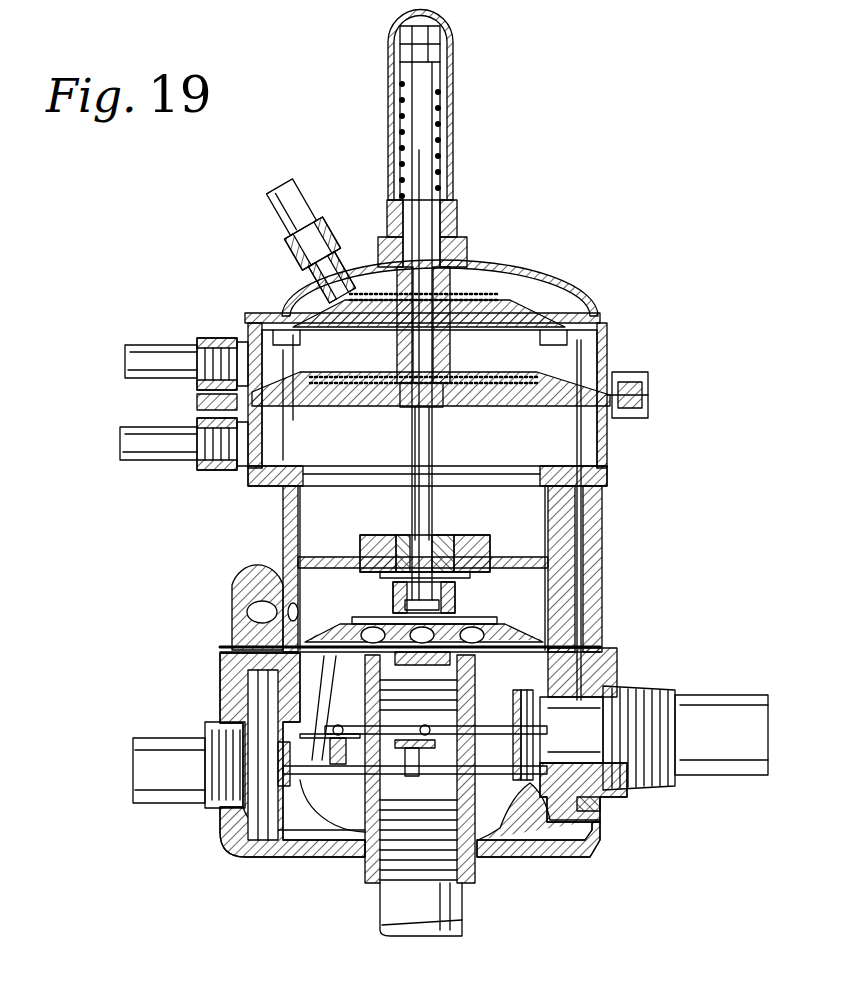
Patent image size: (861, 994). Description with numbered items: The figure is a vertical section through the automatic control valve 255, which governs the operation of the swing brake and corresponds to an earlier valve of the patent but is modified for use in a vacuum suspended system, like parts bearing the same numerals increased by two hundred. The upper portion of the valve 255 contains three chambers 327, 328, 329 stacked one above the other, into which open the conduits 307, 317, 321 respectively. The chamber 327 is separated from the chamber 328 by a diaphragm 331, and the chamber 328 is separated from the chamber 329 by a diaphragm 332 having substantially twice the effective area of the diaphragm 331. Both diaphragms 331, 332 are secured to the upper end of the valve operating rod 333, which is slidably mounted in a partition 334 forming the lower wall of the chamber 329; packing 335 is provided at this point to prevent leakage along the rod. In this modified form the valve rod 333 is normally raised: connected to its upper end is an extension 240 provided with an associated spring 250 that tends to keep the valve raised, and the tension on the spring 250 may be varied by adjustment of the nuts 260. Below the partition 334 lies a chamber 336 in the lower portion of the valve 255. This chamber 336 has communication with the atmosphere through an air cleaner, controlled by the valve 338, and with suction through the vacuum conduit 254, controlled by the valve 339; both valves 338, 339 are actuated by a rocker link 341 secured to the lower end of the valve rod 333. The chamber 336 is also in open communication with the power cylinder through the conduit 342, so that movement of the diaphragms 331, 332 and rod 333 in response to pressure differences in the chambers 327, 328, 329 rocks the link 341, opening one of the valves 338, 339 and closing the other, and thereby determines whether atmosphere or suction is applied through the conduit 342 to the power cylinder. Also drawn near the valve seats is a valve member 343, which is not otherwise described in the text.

The extension 240 is at (440, 112).
The spring 250 is at (448, 138).
The vacuum conduit 254 is at (735, 718).
The valve 255 is at (258, 542).
The nuts 260 is at (450, 54).
The conduit 307 is at (275, 210).
The conduit 317 is at (150, 352).
The conduit 321 is at (132, 442).
The chamber 327 is at (500, 286).
The chamber 328 is at (604, 340).
The chamber 329 is at (572, 436).
The diaphragm 331 is at (532, 318).
The diaphragm 332 is at (576, 390).
The valve operating rod 333 is at (432, 462).
The partition 334 is at (488, 552).
The packing 335 is at (402, 538).
The chamber 336 is at (240, 647).
The valve 338 is at (300, 690).
The valve 339 is at (525, 700).
The rocker link 341 is at (330, 740).
The conduit 342 is at (440, 918).
The valve member 343 is at (505, 636).